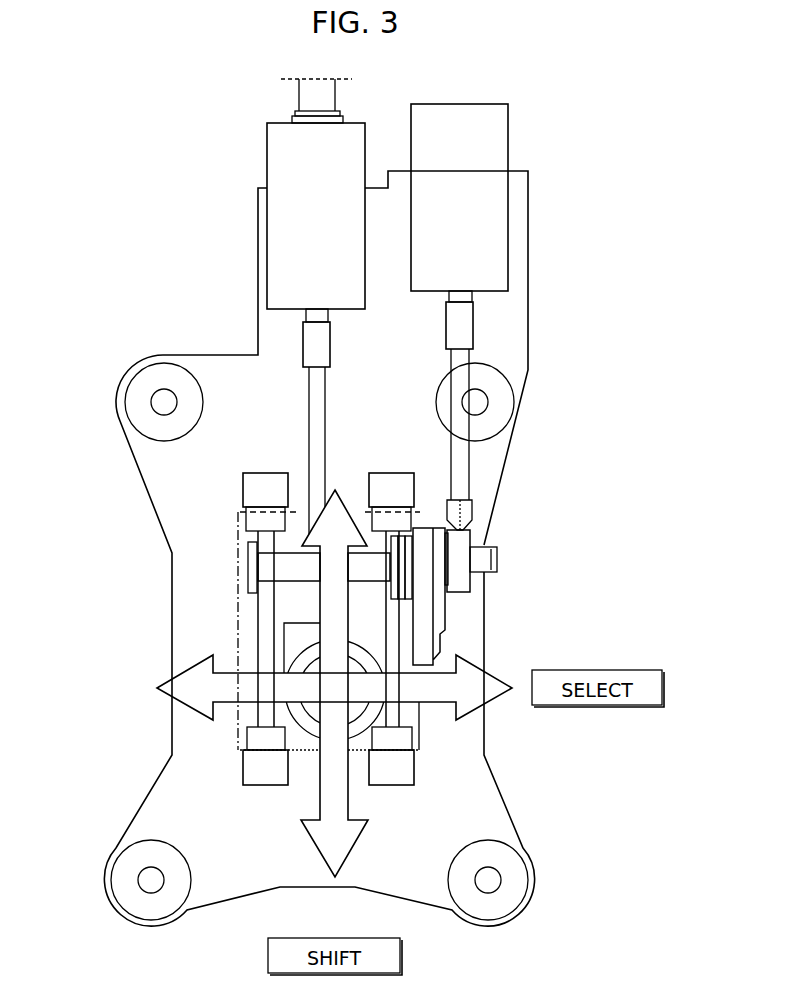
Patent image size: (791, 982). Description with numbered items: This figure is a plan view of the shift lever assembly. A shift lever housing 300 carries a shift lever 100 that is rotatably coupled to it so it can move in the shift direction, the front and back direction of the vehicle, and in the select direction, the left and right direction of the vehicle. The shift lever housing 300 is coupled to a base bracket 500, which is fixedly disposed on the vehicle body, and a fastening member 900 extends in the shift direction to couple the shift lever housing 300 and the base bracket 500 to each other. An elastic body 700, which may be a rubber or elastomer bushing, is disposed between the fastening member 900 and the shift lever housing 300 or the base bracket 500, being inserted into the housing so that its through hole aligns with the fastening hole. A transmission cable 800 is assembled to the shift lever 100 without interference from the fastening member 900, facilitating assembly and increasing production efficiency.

The shift lever 100 is at (358, 660).
The shift lever housing 300 is at (238, 623).
The base bracket 500 is at (500, 458).
The elastic body 700 is at (258, 521).
The transmission cable 800 is at (312, 348).
The fastening member 900 is at (267, 647).